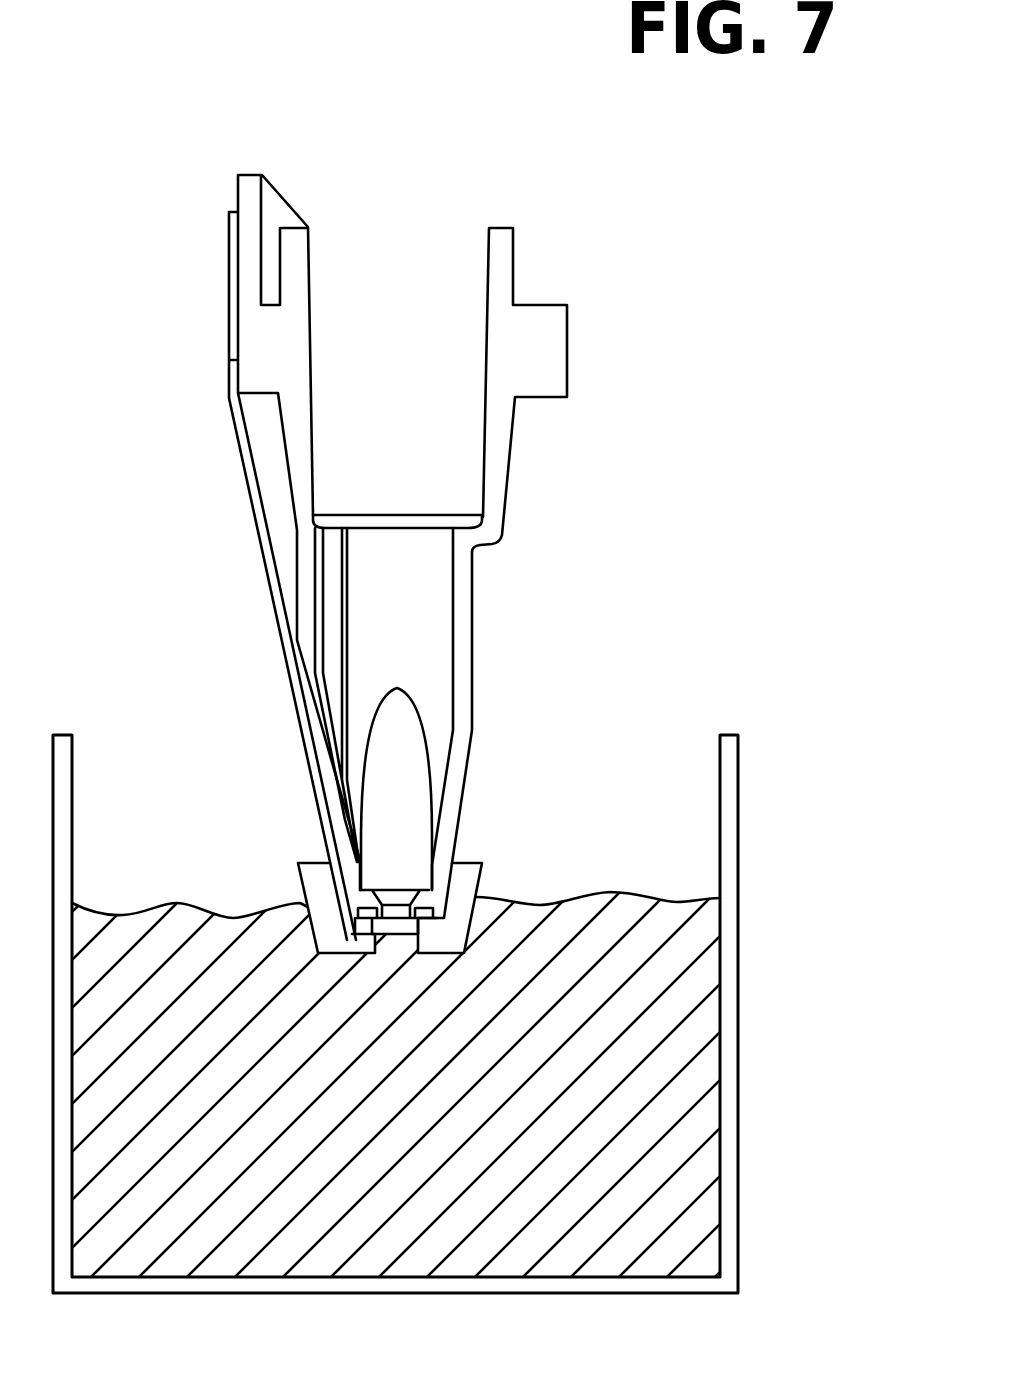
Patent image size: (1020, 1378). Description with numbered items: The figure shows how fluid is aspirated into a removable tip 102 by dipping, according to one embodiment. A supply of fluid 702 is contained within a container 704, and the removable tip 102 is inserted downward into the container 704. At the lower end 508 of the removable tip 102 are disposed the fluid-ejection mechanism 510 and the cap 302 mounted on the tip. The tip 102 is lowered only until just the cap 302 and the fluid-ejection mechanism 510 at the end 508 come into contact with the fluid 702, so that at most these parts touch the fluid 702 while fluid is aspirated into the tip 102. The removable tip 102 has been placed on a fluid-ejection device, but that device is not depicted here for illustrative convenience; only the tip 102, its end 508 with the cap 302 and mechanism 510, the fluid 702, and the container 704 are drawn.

The removable tip 102 is at (655, 306).
The cap 302 is at (325, 910).
The end 508 is at (428, 905).
The fluid-ejection mechanism 510 is at (390, 933).
The supply of fluid 702 is at (675, 913).
The container 704 is at (732, 807).